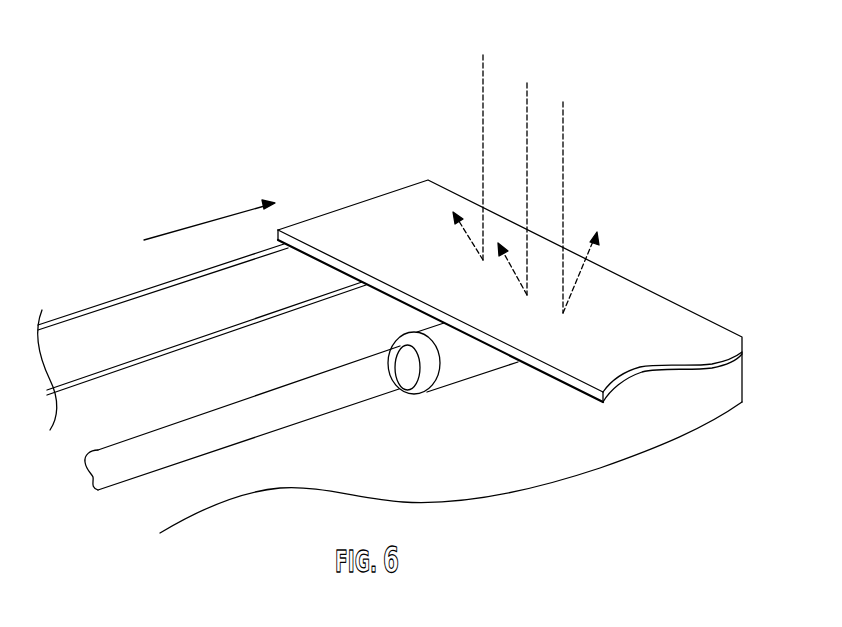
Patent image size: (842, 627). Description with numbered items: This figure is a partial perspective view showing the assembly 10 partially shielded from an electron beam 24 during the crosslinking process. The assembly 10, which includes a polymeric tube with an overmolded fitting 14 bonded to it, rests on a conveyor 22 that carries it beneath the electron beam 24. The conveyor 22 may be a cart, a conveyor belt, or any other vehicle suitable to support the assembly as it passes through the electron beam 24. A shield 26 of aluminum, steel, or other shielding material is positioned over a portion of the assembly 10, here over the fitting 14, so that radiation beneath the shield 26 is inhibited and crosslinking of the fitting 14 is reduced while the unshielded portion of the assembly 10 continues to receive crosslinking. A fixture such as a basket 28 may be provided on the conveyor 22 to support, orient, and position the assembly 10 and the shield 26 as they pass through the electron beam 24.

The assembly 10 is at (362, 360).
The second polymeric component 14 is at (468, 367).
The conveyor 22 is at (374, 469).
The electron beam 24 is at (563, 163).
The shield 26 is at (614, 341).
The basket 28 is at (82, 308).